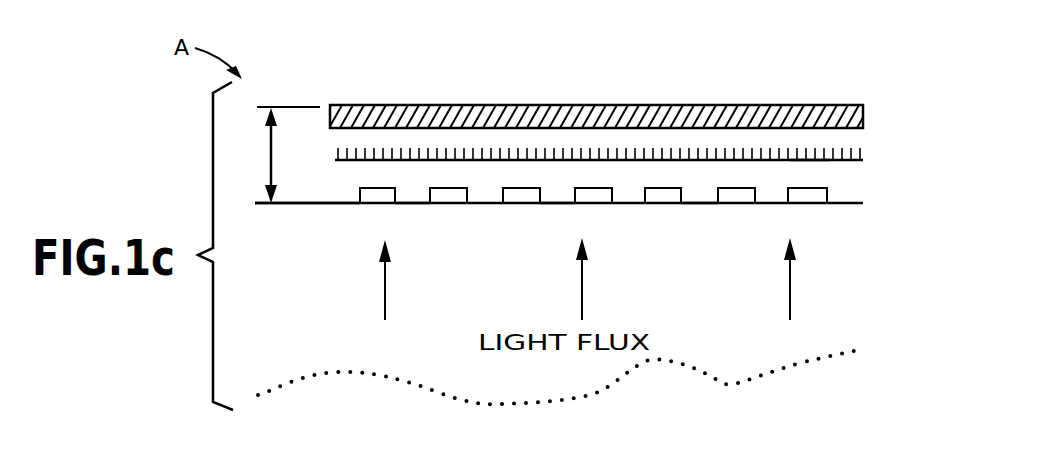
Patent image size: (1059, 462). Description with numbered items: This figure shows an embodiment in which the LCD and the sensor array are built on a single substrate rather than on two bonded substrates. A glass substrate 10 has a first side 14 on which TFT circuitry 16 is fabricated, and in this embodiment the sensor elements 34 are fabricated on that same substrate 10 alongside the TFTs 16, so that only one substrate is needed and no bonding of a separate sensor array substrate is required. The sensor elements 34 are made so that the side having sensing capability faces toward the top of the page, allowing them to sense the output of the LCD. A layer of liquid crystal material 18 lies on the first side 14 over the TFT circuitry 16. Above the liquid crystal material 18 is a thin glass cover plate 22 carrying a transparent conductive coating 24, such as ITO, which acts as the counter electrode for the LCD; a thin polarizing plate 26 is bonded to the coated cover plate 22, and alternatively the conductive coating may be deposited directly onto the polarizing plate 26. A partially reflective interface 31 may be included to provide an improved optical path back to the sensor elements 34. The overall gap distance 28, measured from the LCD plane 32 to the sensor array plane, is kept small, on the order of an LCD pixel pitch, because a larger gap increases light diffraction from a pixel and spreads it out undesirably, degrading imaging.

The glass substrate 10 is at (328, 208).
The first side 14 is at (308, 202).
The TFT circuitry 16 is at (360, 189).
The liquid crystal material 18 is at (856, 193).
The glass cover plate 22 is at (803, 161).
The transparent conductive coating 24 is at (858, 157).
The polarizing plate 26 is at (863, 112).
The gap distance 28 is at (270, 152).
The partially reflective interface 31 is at (332, 104).
The LCD plane 32 is at (252, 207).
The sensor elements 34 is at (432, 188).